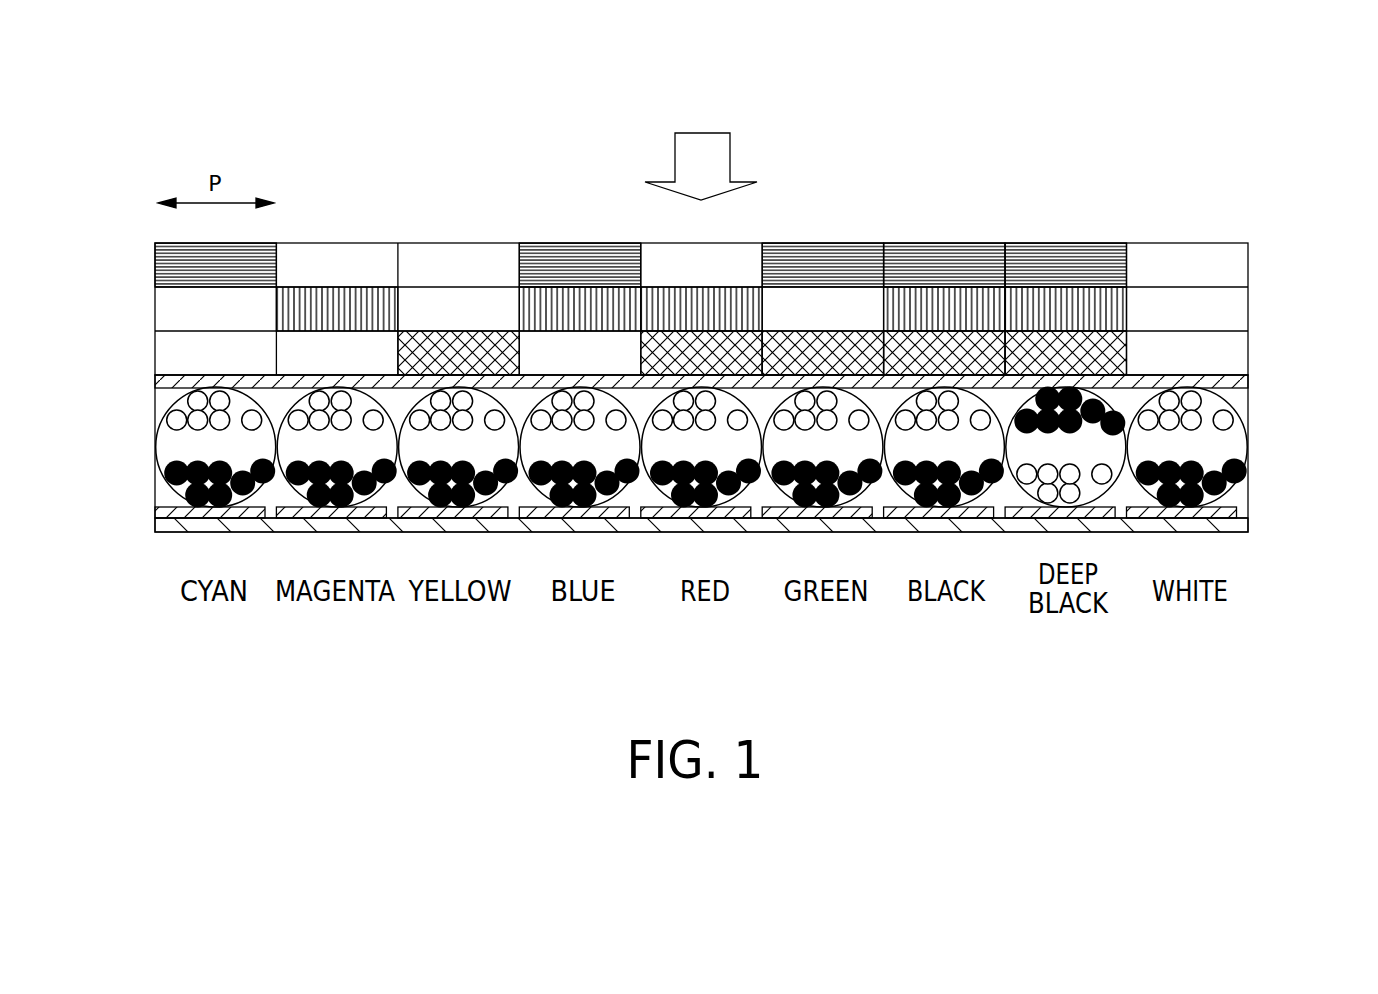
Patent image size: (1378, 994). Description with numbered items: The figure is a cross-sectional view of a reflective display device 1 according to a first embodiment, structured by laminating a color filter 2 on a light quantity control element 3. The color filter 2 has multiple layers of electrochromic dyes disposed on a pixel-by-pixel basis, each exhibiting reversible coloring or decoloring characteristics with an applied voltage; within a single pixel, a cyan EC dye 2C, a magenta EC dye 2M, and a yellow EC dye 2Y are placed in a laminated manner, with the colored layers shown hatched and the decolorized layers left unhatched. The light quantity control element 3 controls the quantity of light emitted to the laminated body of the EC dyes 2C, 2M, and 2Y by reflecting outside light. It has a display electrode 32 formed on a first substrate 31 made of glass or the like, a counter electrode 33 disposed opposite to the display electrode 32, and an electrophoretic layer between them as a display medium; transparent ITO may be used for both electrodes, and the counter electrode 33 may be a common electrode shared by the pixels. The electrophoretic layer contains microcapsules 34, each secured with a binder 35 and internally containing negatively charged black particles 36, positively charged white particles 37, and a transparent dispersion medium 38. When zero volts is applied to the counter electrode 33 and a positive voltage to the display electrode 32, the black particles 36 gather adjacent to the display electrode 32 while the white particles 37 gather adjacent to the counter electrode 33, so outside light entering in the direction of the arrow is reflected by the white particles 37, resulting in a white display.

The display device 1 is at (1218, 122).
The color filter 2 is at (1322, 250).
The cyan EC dye 2C is at (1232, 268).
The magenta EC dye 2M is at (1232, 314).
The yellow EC dye 2Y is at (1232, 359).
The light quantity control element 3 is at (1322, 380).
The first substrate 31 is at (1240, 524).
The display electrode 32 is at (1238, 513).
The counter electrode 33 is at (1247, 385).
The microcapsules 34 is at (1240, 455).
The binder 35 is at (1240, 408).
The black particles 36 is at (172, 490).
The white particles 37 is at (172, 421).
The transparent dispersion medium 38 is at (172, 452).